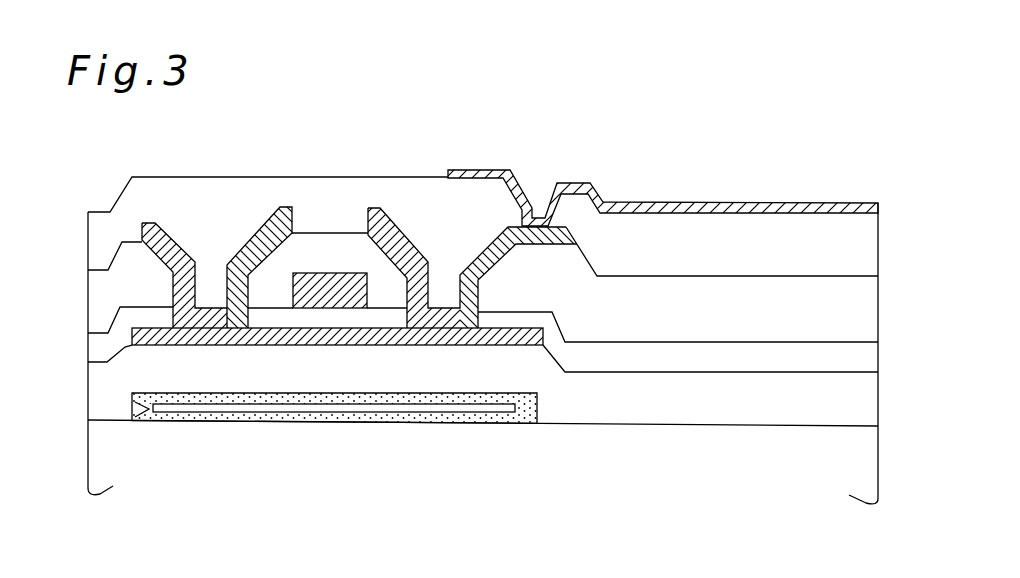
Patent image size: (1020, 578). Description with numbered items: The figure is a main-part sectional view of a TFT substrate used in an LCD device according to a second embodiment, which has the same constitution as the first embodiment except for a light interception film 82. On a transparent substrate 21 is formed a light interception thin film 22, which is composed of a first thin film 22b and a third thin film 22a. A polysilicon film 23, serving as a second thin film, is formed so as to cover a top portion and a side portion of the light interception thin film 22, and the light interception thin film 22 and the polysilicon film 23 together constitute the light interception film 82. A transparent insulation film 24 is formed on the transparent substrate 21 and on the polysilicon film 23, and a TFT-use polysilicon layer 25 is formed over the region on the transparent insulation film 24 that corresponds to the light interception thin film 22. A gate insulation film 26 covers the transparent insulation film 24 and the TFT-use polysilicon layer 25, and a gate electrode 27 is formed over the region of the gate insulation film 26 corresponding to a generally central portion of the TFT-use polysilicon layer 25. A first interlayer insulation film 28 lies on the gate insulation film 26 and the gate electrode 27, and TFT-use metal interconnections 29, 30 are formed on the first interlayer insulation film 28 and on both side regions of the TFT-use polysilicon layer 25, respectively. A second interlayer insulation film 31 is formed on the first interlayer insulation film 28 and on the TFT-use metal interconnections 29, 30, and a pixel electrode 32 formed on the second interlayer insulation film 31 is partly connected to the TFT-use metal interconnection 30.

The transparent substrate 21 is at (607, 455).
The light interception thin film 22 is at (267, 426).
The third thin film 22a is at (446, 420).
The first thin film 22b is at (500, 412).
The polysilicon film 23 is at (333, 403).
The transparent insulation film 24 is at (708, 408).
The TFT-use polysilicon layer 25 is at (210, 343).
The gate insulation film 26 is at (808, 360).
The gate electrode 27 is at (346, 298).
The first interlayer insulation film 28 is at (760, 303).
The TFT-use metal interconnection 29 is at (176, 242).
The TFT-use metal interconnection 30 is at (392, 220).
The second interlayer insulation film 31 is at (668, 238).
The pixel electrode 32 is at (520, 180).
The light interception film 82 is at (135, 407).